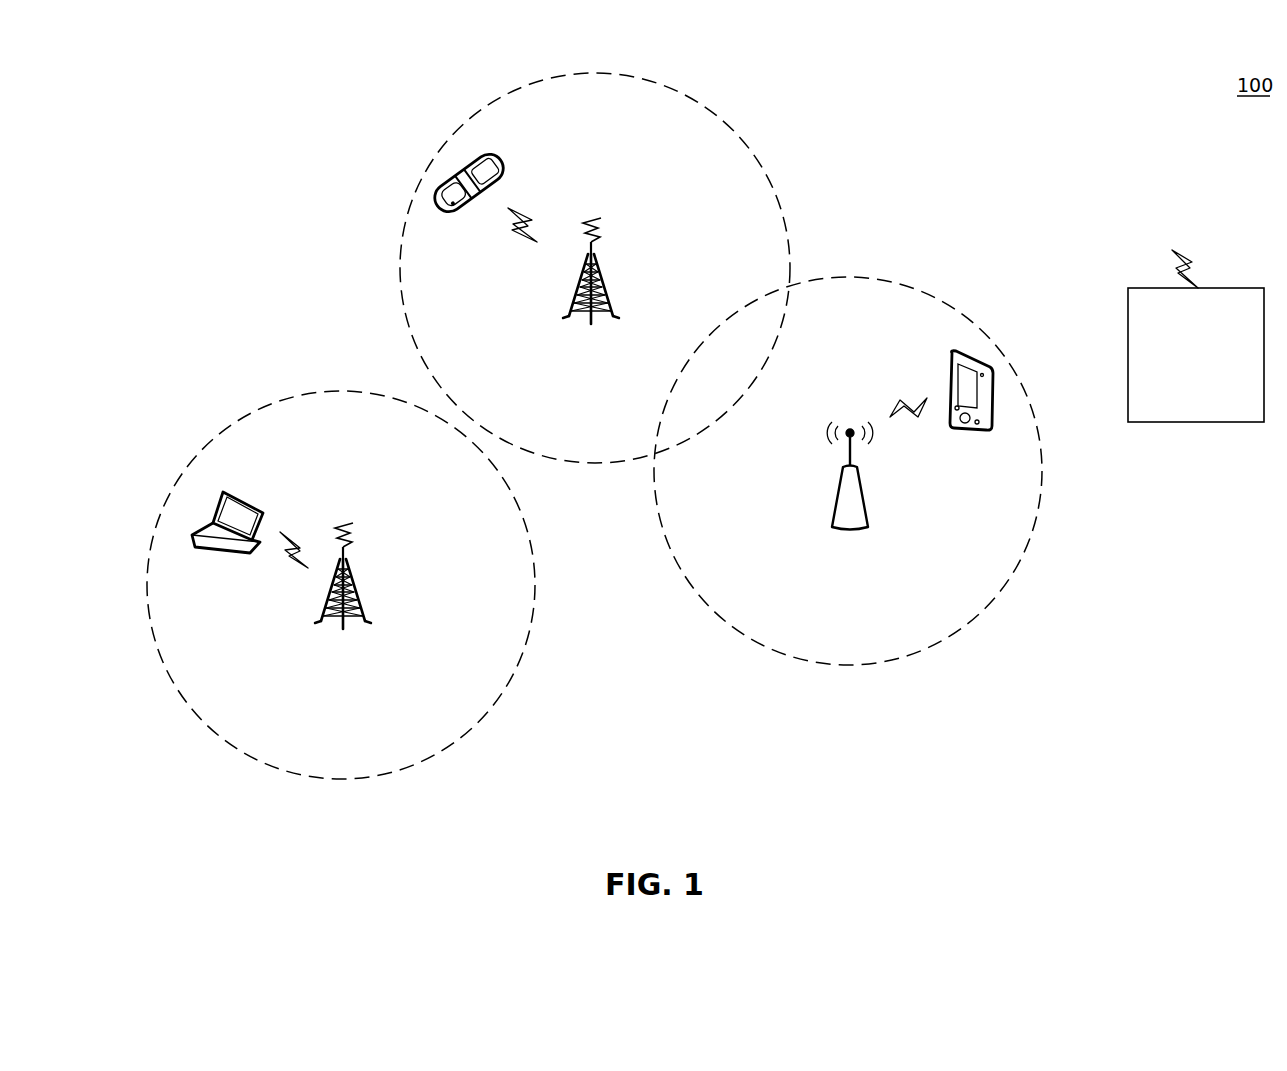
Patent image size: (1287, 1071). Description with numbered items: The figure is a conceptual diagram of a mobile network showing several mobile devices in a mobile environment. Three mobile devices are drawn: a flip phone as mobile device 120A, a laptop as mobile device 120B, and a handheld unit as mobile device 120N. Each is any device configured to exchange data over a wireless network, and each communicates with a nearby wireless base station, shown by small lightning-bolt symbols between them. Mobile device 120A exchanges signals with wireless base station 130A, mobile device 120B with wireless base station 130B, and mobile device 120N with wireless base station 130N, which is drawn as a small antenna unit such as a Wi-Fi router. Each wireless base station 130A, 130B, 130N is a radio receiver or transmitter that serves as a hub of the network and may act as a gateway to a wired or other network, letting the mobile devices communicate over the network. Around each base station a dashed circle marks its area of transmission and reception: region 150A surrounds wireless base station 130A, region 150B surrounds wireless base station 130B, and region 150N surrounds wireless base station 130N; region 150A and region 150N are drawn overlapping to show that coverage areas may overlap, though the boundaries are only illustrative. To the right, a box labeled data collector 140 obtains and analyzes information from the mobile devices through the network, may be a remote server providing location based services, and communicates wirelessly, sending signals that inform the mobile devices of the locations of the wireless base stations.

The mobile device 120A is at (500, 185).
The mobile device 120B is at (240, 500).
The mobile device 120N is at (948, 368).
The wireless base station 130A is at (600, 270).
The wireless base station 130B is at (355, 577).
The wireless base station 130N is at (866, 500).
The data collector 140 is at (1196, 336).
The region 150A is at (722, 117).
The region 150B is at (180, 694).
The region 150N is at (1040, 500).